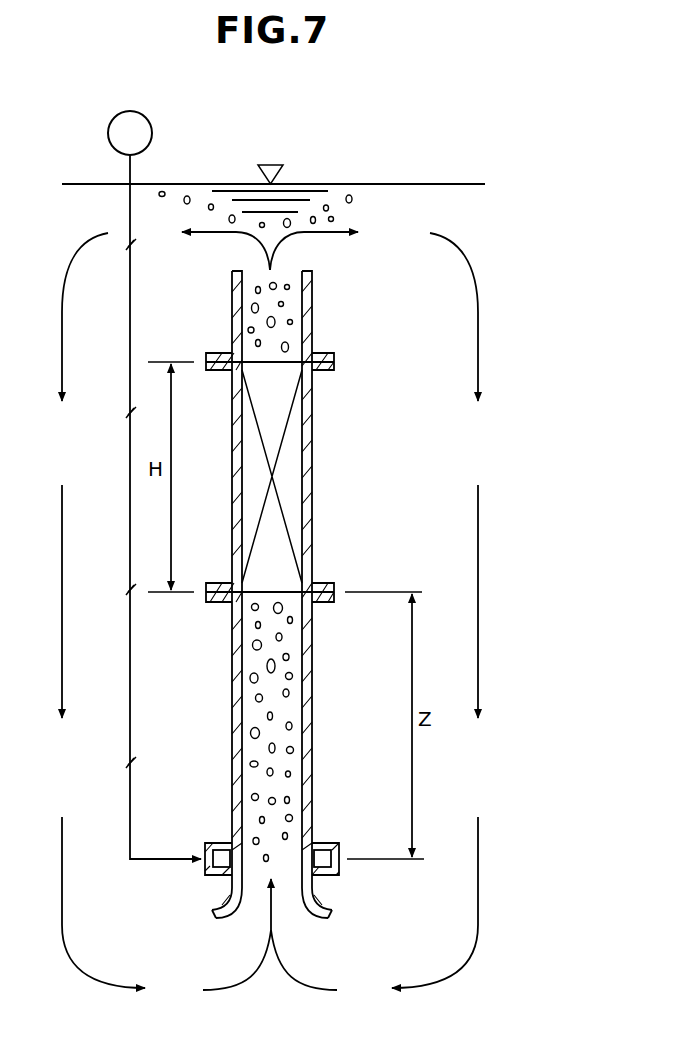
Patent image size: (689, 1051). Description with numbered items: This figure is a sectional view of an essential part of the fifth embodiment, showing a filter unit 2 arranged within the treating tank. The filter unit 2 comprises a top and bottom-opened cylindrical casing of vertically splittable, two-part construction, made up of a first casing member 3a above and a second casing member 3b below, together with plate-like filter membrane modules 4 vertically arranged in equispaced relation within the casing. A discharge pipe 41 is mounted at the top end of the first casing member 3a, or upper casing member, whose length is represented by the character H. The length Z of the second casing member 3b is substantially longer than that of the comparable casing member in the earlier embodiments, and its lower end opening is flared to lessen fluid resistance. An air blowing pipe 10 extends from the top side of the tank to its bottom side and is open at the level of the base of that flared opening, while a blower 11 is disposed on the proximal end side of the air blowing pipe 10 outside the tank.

The blower 11 is at (108, 131).
The filter unit 2 is at (314, 514).
The discharge pipe 41 is at (313, 301).
The first casing member 3a is at (313, 562).
The filter membrane module 4 is at (290, 432).
The second casing member 3b is at (313, 707).
The air blowing pipe 10 is at (177, 860).